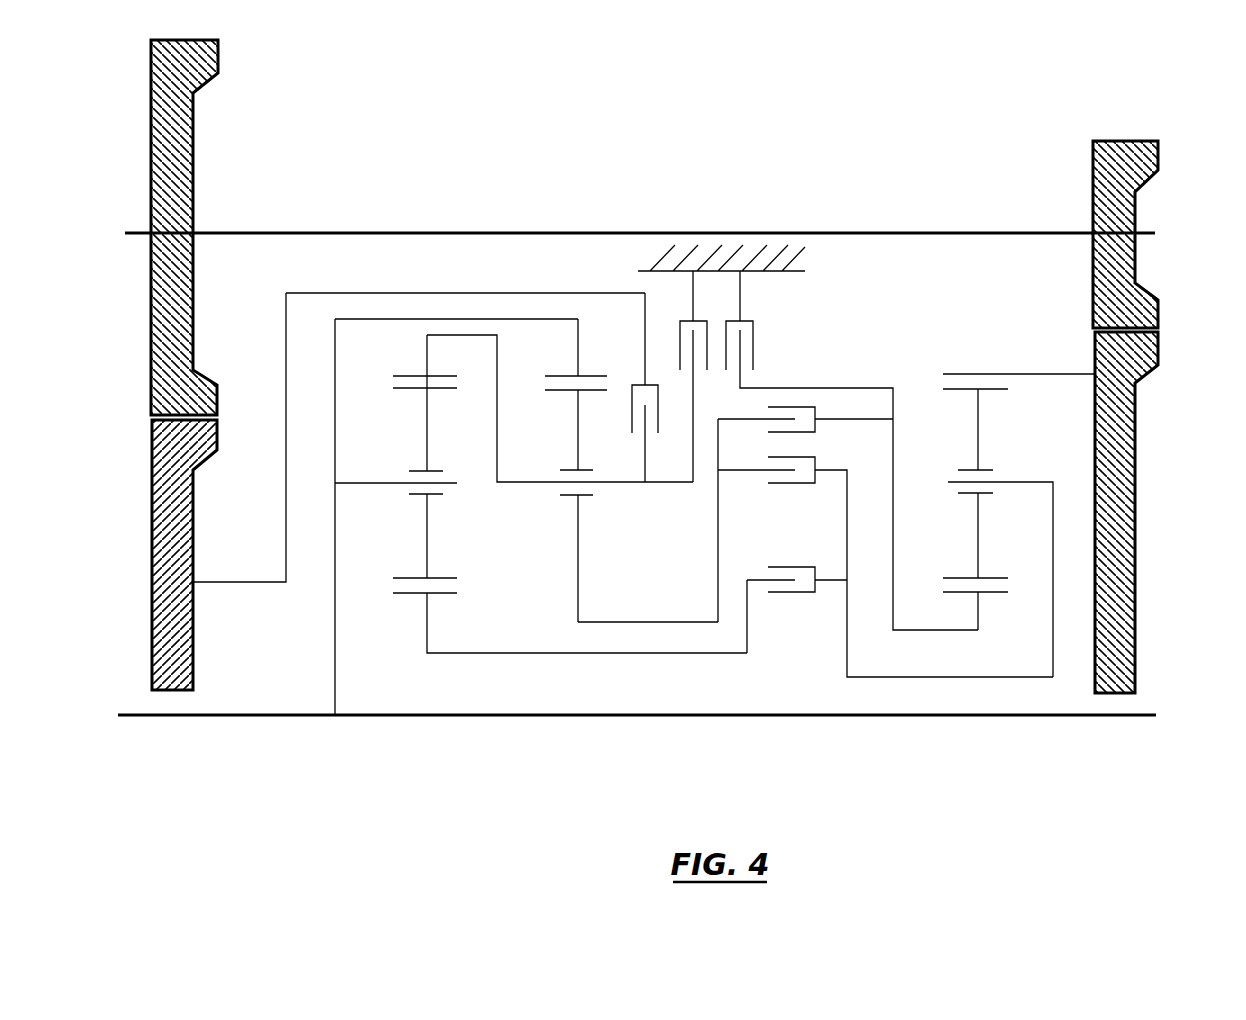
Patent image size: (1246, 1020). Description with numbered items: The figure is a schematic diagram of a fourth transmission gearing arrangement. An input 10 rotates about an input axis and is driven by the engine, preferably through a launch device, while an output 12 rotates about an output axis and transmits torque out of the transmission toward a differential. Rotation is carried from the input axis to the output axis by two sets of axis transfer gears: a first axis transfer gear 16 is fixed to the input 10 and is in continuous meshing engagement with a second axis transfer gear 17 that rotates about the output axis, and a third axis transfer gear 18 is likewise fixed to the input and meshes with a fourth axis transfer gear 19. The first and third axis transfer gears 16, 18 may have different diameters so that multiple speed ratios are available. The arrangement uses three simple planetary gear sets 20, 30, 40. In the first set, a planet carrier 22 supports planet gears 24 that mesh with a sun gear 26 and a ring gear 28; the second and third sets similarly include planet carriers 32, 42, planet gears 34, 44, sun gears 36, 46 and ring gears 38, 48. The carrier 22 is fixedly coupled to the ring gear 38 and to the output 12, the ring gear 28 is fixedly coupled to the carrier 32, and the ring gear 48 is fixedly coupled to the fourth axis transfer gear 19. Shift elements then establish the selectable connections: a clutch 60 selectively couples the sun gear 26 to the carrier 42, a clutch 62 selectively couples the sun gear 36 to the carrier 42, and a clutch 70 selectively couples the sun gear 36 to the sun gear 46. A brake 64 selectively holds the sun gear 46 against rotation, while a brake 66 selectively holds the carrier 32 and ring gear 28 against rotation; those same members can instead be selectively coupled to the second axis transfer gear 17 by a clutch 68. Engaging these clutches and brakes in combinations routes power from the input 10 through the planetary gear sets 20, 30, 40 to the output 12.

The input 10 is at (442, 232).
The output 12 is at (740, 717).
The first axis transfer gear 16 is at (193, 152).
The second axis transfer gear 17 is at (180, 672).
The third axis transfer gear 18 is at (1125, 263).
The fourth axis transfer gear 19 is at (1130, 488).
The simple planetary gear set 20 is at (418, 770).
The planet carrier 22 is at (345, 485).
The planet gears 24 is at (427, 437).
The sun gear 26 is at (430, 655).
The ring gear 28 is at (432, 338).
The simple planetary gear set 30 is at (575, 770).
The planet carrier 32 is at (608, 485).
The planet gears 34 is at (578, 437).
The sun gear 36 is at (578, 622).
The ring gear 38 is at (578, 345).
The simple planetary gear set 40 is at (975, 770).
The planet carrier 42 is at (1022, 480).
The planet gears 44 is at (975, 432).
The sun gear 46 is at (978, 632).
The ring gear 48 is at (1010, 372).
The clutch 60 is at (797, 610).
The clutch 62 is at (885, 567).
The brake 64 is at (808, 437).
The brake 66 is at (703, 376).
The clutch 68 is at (654, 387).
The clutch 70 is at (805, 514).